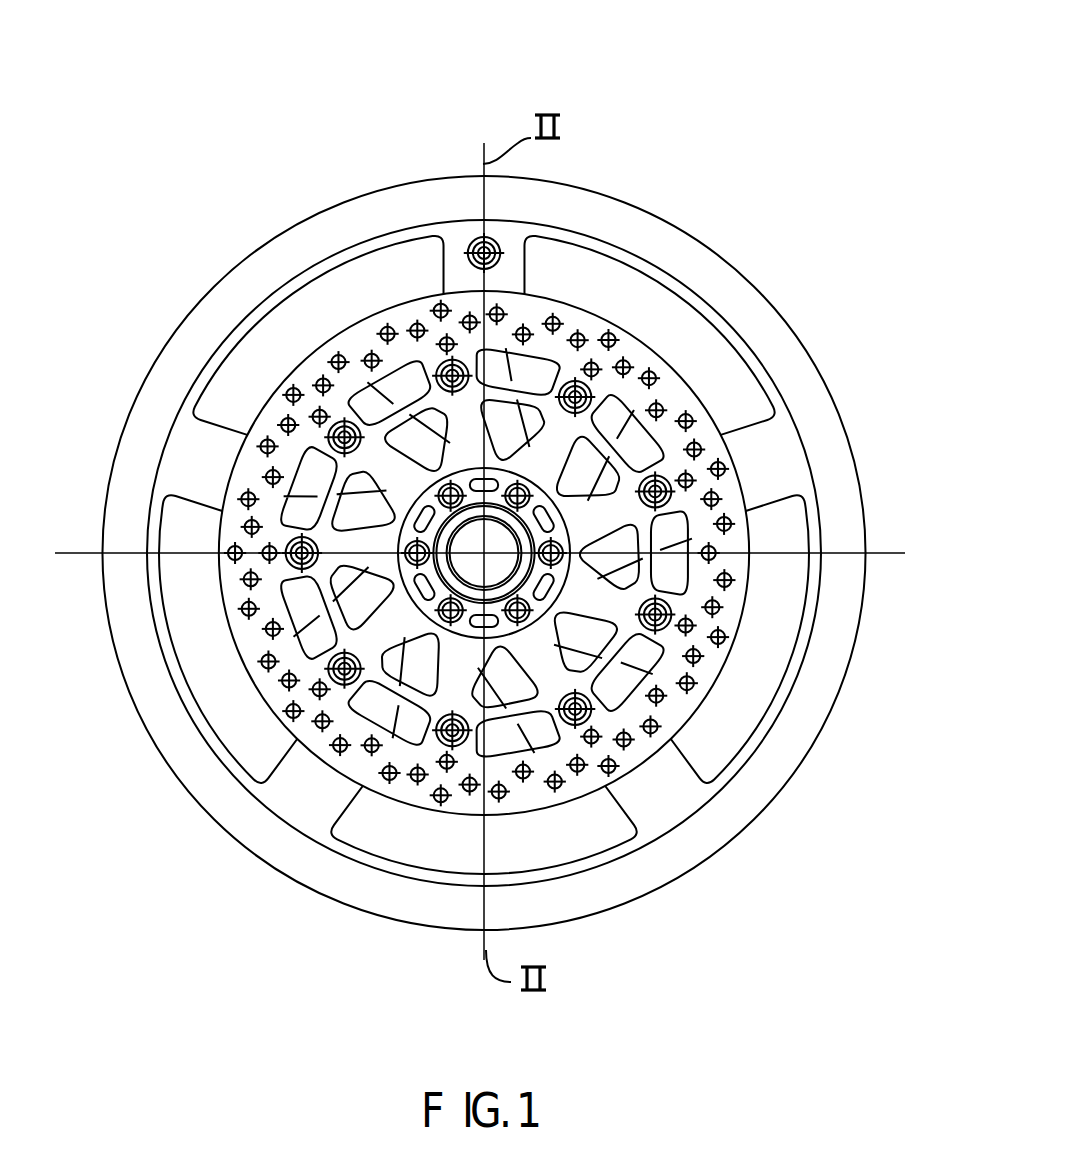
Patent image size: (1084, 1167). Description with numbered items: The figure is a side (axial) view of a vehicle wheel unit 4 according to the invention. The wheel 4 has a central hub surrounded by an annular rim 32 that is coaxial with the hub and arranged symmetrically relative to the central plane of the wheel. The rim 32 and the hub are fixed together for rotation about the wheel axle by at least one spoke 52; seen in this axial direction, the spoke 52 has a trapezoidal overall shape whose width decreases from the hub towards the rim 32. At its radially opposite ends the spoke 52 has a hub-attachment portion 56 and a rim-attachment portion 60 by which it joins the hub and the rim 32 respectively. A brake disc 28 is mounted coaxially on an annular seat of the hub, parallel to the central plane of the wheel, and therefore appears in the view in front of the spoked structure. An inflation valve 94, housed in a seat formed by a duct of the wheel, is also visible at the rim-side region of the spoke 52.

The vehicle wheel unit 4 is at (684, 113).
The brake disc 28 is at (635, 357).
The annular rim 32 is at (246, 284).
The spoke 52 is at (510, 273).
The hub-attachment portion 56 is at (398, 441).
The rim-attachment portion 60 is at (430, 275).
The inflation valve 94 is at (472, 247).